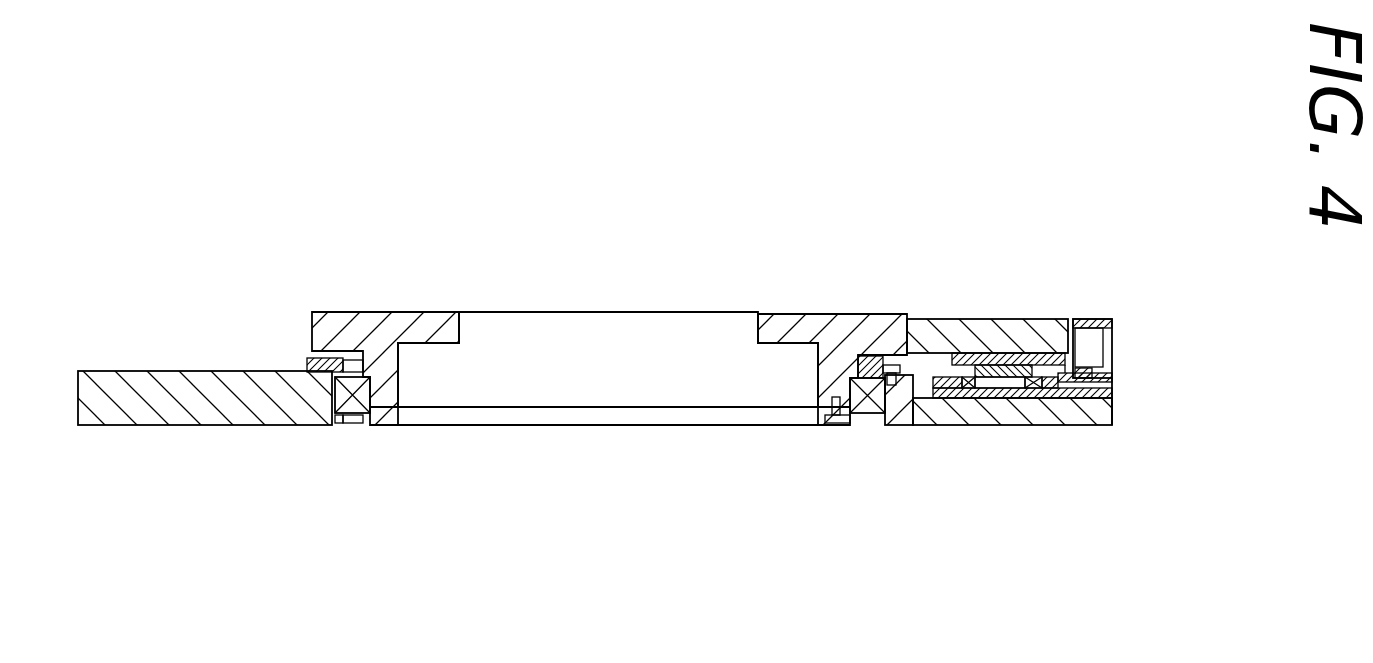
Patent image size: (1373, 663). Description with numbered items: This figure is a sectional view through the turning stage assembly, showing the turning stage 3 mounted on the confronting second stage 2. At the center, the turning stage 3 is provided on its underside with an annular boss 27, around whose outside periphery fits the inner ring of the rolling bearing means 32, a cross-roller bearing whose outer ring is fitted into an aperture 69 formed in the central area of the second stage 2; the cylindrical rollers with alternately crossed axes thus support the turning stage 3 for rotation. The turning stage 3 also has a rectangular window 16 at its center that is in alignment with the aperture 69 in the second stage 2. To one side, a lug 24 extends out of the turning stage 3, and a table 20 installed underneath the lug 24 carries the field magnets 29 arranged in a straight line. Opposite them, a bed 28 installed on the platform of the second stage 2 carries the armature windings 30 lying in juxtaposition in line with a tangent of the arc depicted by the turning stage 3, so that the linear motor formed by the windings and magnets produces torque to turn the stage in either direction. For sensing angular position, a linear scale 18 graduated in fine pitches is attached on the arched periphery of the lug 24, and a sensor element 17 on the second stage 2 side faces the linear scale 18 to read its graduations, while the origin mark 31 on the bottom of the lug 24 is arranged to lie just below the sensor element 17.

The second stage 2 is at (178, 385).
The turning stage 3 is at (385, 325).
The rectangular window 16 is at (462, 340).
The sensor element 17 is at (1097, 352).
The linear scale 18 is at (1085, 323).
The table 20 is at (1012, 366).
The lug 24 is at (972, 335).
The annular boss 27 is at (388, 386).
The bed 28 is at (948, 390).
The field magnets 29 is at (1003, 400).
The armature winding 30 is at (965, 388).
The origin mark 31 is at (1112, 382).
The rolling bearing means 32 is at (350, 410).
The aperture 69 is at (335, 418).